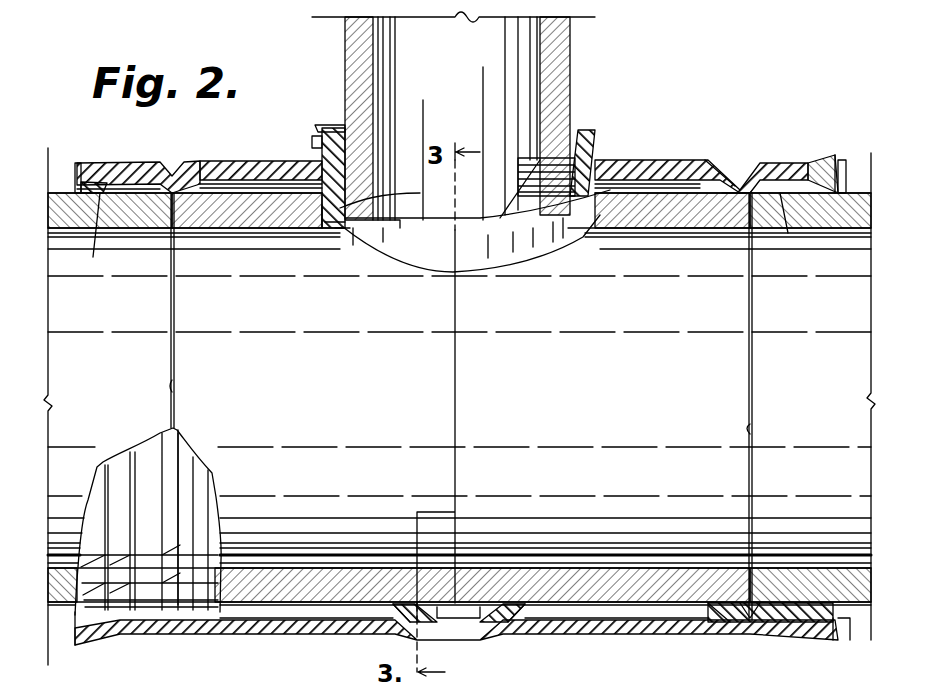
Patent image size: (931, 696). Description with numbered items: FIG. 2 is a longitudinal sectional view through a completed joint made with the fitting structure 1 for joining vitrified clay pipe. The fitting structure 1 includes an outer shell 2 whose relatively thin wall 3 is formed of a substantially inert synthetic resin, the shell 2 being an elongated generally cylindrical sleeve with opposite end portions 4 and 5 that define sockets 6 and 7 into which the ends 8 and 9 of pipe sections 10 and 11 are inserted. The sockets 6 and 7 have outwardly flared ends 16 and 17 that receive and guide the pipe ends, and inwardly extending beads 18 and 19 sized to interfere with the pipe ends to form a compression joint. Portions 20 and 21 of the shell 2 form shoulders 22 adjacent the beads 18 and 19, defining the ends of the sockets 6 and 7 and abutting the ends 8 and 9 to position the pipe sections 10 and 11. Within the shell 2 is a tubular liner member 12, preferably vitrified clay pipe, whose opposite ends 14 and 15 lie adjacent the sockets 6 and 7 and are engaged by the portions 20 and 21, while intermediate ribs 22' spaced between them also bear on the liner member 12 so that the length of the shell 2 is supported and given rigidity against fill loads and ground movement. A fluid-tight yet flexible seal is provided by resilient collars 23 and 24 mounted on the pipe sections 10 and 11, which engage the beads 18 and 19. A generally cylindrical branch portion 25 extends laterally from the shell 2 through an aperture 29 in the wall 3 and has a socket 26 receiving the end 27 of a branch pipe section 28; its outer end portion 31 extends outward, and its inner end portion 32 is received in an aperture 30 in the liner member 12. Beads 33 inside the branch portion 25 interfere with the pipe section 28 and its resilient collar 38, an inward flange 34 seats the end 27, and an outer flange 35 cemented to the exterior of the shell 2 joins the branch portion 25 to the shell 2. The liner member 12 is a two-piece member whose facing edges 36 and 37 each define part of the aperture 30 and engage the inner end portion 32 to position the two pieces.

The fitting structure 1 is at (642, 109).
The outer shell 2 is at (216, 164).
The wall 3 is at (672, 160).
The end portion 4 is at (104, 164).
The end portion 5 is at (816, 164).
The socket 6 is at (80, 613).
The socket 7 is at (838, 618).
The end 8 is at (173, 360).
The end 9 is at (746, 432).
The pipe section 10 is at (58, 490).
The pipe section 11 is at (852, 478).
The tubular liner member 12 is at (310, 605).
The end 14 is at (174, 390).
The end 15 is at (746, 384).
The outwardly flared end 16 is at (78, 164).
The outwardly flared end 17 is at (836, 160).
The bead 18 is at (94, 258).
The bead 19 is at (782, 193).
The portion 20 is at (184, 454).
The portion 21 is at (722, 570).
The shoulder 22 is at (162, 521).
The intermediate rib 22' is at (460, 547).
The resilient collar 23 is at (80, 188).
The resilient collar 24 is at (836, 186).
The branch portion 25 is at (316, 142).
The socket 26 is at (394, 195).
The end 27 is at (398, 222).
The pipe section 28 is at (572, 72).
The aperture 29 is at (320, 204).
The aperture 30 is at (332, 222).
The outer end portion 31 is at (320, 130).
The inner end portion 32 is at (320, 220).
The bead 33 is at (573, 134).
The flange 34 is at (360, 238).
The outer flange 35 is at (614, 152).
The facing edge 36 is at (446, 265).
The facing edge 37 is at (523, 238).
The resilient collar 38 is at (332, 130).